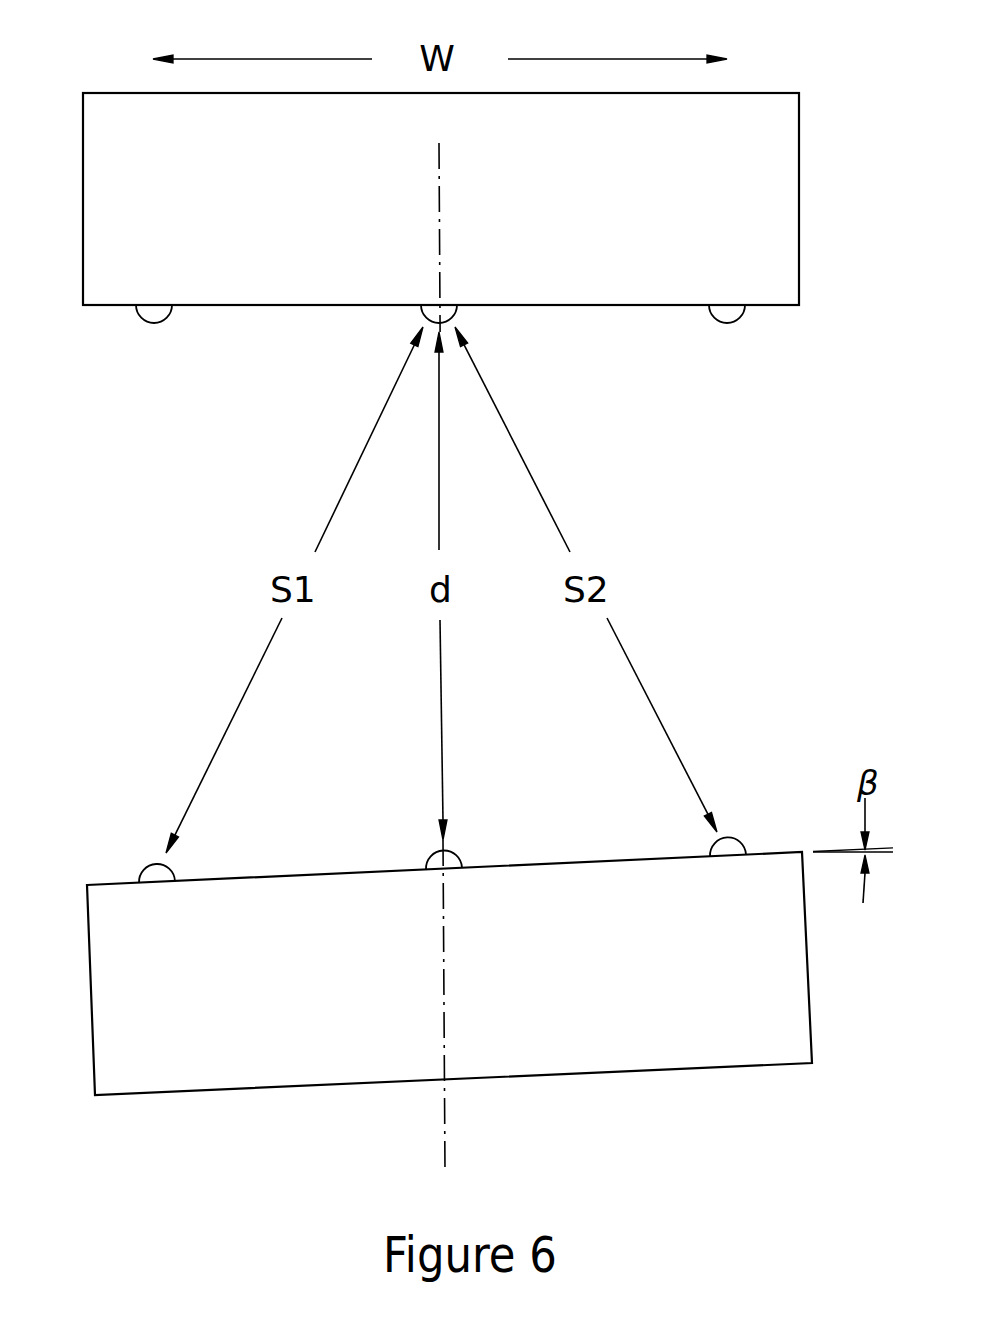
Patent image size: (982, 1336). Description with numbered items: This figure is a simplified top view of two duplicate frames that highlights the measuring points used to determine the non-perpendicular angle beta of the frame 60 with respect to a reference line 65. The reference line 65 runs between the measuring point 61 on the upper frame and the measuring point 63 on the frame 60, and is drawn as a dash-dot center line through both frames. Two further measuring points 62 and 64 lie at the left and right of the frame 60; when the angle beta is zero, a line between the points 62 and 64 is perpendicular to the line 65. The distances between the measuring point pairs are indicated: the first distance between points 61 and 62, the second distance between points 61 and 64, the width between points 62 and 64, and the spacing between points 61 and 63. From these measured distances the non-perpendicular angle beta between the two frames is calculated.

The frame 60 is at (233, 1097).
The measuring point 61 is at (468, 320).
The measuring point 62 is at (148, 853).
The measuring point 63 is at (427, 848).
The measuring point 64 is at (738, 830).
The reference line 65 is at (448, 1115).